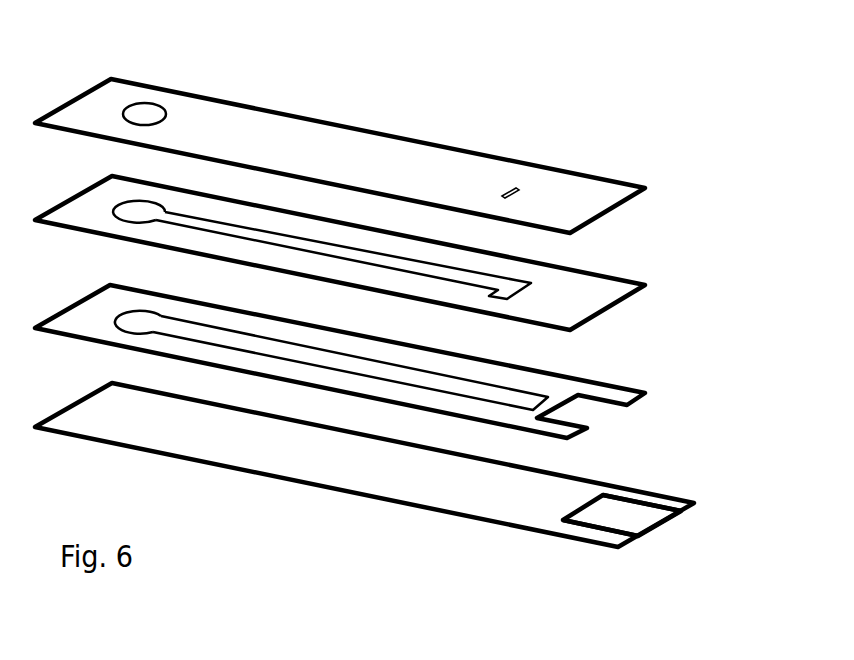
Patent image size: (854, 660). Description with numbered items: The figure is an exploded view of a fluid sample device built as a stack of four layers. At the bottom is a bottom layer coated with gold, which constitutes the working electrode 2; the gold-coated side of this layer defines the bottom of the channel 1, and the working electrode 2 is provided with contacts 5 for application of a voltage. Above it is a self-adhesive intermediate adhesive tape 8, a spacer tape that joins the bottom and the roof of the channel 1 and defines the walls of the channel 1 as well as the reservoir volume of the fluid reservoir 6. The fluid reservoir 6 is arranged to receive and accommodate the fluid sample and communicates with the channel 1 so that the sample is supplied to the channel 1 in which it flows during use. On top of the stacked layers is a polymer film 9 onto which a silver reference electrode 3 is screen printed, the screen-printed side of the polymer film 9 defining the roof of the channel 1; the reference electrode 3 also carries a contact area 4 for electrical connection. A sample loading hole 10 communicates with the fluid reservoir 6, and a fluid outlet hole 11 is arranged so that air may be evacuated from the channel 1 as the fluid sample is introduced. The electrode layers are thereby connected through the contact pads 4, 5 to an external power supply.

The channel 1 is at (297, 352).
The working electrode 2 is at (278, 477).
The reference electrode 3 is at (627, 297).
The contact area 4 is at (657, 518).
The contacts 5 is at (672, 503).
The fluid reservoir 6 is at (139, 322).
The intermediate adhesive tape 8 is at (102, 343).
The polymer film 9 is at (458, 150).
The sample loading hole 10 is at (148, 110).
The fluid outlet hole 11 is at (518, 188).